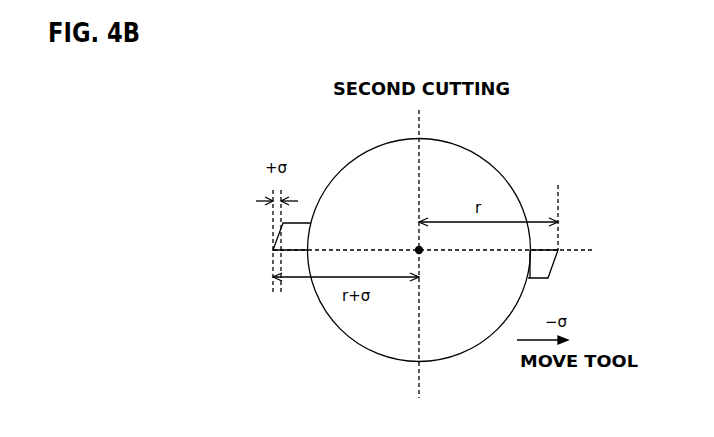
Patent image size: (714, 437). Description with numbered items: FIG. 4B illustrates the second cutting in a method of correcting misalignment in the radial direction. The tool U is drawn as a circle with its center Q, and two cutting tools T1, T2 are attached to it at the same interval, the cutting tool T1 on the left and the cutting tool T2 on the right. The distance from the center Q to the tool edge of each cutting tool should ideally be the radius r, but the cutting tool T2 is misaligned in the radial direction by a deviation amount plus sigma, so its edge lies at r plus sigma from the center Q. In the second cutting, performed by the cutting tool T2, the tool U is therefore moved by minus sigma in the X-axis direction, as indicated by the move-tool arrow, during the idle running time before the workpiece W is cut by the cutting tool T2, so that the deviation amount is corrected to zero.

The workpiece W is at (294, 250).
The center of the tool Q is at (419, 259).
The tool U is at (457, 330).
The cutting tool T1 is at (292, 232).
The cutting tool T2 is at (543, 258).